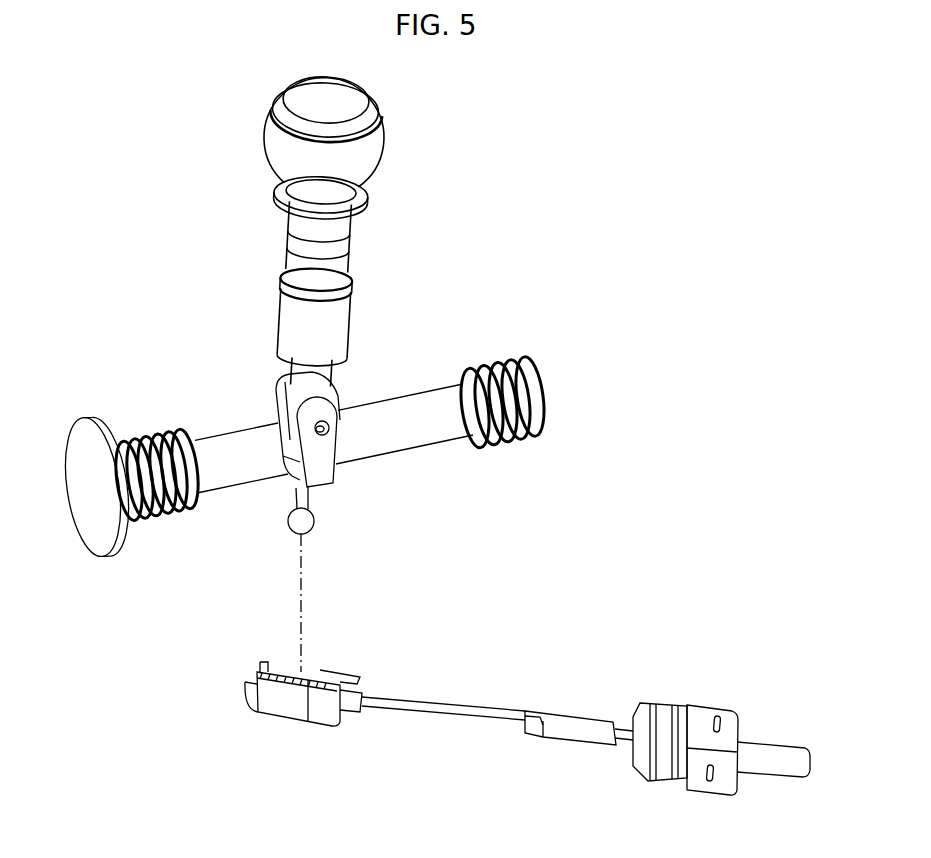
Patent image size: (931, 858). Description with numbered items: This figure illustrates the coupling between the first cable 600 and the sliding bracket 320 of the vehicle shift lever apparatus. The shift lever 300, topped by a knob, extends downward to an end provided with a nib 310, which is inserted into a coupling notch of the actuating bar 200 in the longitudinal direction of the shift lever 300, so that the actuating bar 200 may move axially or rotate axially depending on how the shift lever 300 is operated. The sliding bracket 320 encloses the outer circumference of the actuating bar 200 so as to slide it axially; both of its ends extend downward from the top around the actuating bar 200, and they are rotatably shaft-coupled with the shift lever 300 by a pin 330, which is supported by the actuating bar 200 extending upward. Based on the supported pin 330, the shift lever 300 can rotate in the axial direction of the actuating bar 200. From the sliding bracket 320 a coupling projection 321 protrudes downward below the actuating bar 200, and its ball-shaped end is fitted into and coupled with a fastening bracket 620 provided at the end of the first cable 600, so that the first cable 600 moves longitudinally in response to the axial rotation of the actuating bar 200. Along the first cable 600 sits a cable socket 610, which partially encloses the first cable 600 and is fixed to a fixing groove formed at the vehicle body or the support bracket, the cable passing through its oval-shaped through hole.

The actuating bar 200 is at (217, 467).
The shift lever 300 is at (293, 323).
The nib 310 is at (277, 382).
The sliding bracket 320 is at (327, 450).
The coupling projection 321 is at (307, 522).
The pin 330 is at (327, 422).
The first cable 600 is at (485, 700).
The cable socket 610 is at (702, 722).
The fastening bracket 620 is at (285, 700).